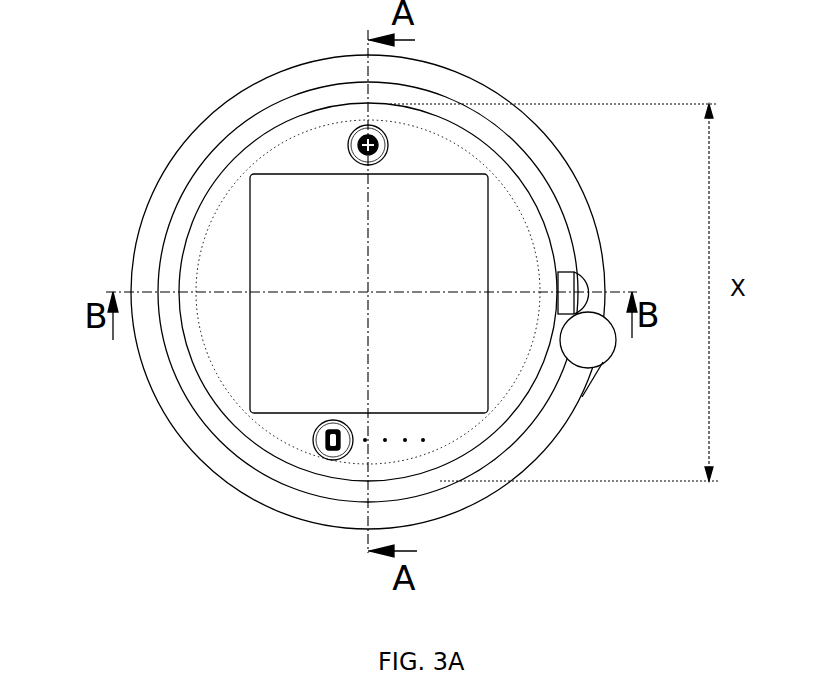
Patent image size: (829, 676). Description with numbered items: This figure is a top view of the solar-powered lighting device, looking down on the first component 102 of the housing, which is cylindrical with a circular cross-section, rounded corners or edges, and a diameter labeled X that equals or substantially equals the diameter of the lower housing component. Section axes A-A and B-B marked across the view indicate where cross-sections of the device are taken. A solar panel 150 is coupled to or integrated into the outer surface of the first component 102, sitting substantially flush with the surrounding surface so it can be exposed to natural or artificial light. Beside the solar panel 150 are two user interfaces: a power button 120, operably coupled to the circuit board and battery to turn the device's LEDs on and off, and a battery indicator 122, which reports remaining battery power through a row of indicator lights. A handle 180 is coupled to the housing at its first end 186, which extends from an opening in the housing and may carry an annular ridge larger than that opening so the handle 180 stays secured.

The first component 102 is at (225, 230).
The power button 120 is at (380, 138).
The battery indicator 122 is at (322, 445).
The solar panel 150 is at (312, 338).
The handle 180 is at (455, 507).
The first end 186 is at (573, 292).